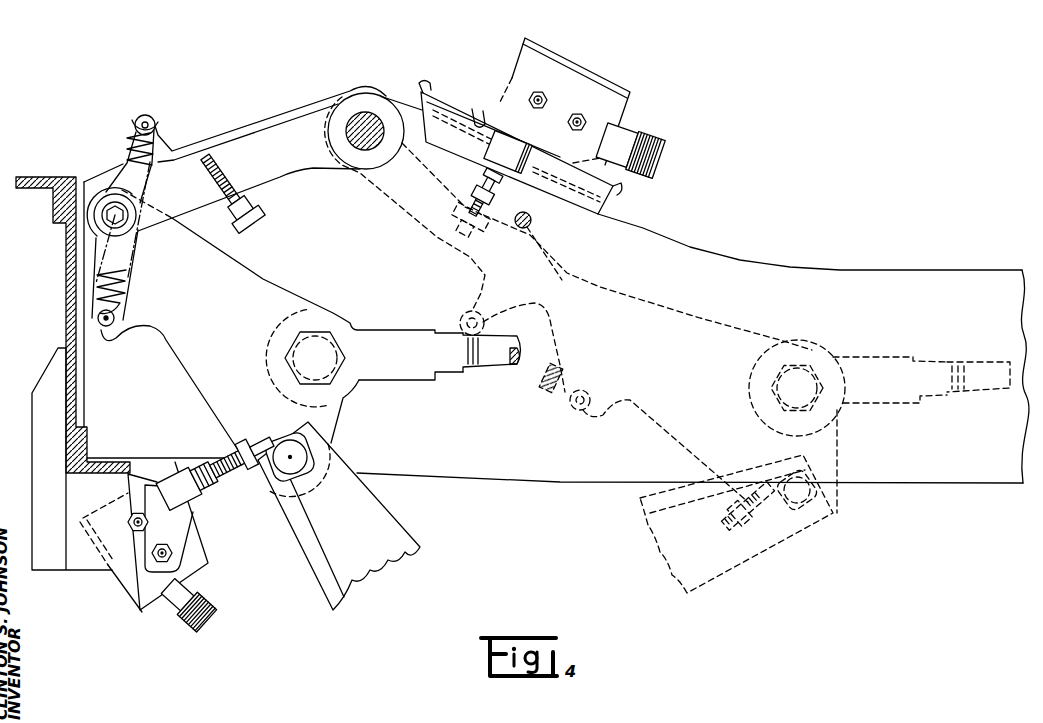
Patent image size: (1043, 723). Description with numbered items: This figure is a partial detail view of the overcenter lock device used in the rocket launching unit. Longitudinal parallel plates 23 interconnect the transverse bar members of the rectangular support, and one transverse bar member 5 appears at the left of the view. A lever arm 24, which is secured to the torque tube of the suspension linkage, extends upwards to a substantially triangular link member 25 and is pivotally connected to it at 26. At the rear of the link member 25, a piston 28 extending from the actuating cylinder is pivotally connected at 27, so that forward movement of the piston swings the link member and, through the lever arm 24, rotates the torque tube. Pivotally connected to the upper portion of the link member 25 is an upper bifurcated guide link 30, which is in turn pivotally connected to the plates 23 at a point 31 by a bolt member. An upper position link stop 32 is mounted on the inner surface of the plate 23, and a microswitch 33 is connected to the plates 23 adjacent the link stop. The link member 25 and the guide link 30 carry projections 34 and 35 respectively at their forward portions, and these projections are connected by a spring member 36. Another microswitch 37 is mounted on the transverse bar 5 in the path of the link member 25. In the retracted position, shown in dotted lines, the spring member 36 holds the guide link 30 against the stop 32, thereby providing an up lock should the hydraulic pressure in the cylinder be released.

The transverse bar member 5 is at (65, 288).
The longitudinal parallel plates 23 is at (441, 466).
The lever arm 24 is at (340, 562).
The triangular link member 25 is at (190, 354).
The pivotal connection 26 is at (300, 454).
The pivotal connection 27 is at (328, 345).
The piston 28 is at (483, 370).
The upper bifurcated guide link 30 is at (280, 168).
The pivot point 31 is at (375, 118).
The upper position link stop 32 is at (532, 221).
The microswitch 33 is at (610, 111).
The projection 34 is at (104, 332).
The projection 35 is at (158, 127).
The spring member 36 is at (123, 276).
The microswitch 37 is at (147, 588).